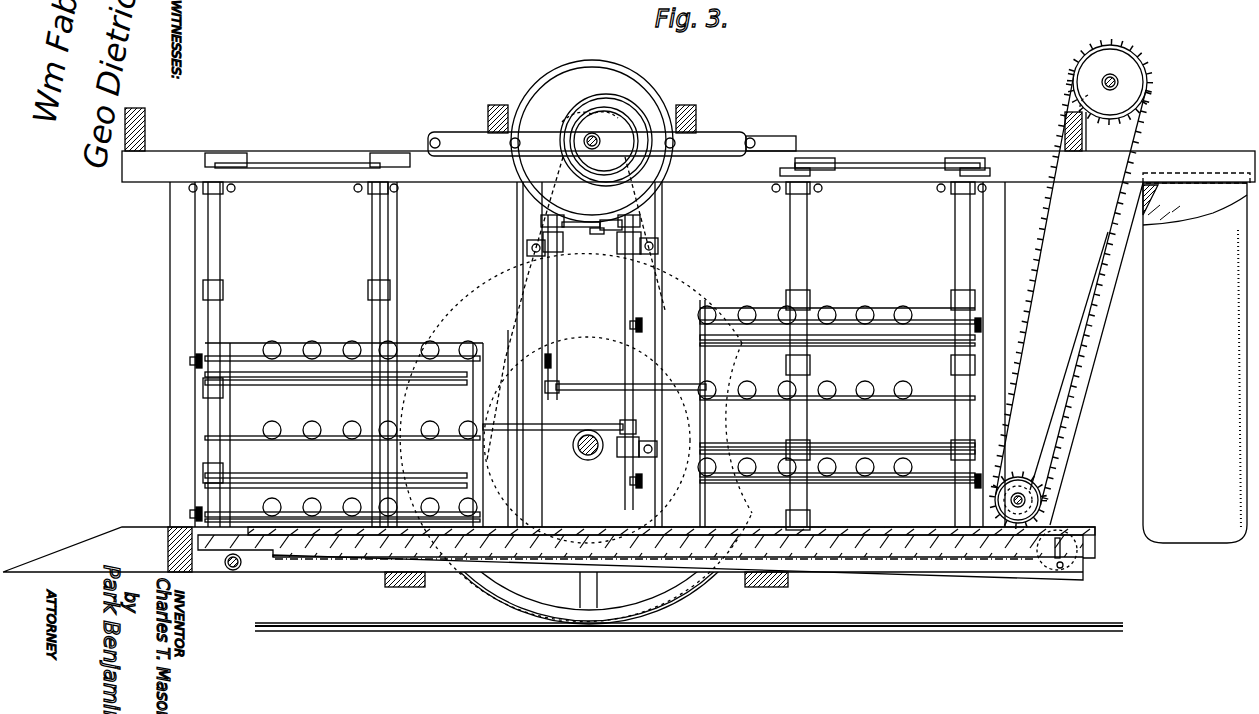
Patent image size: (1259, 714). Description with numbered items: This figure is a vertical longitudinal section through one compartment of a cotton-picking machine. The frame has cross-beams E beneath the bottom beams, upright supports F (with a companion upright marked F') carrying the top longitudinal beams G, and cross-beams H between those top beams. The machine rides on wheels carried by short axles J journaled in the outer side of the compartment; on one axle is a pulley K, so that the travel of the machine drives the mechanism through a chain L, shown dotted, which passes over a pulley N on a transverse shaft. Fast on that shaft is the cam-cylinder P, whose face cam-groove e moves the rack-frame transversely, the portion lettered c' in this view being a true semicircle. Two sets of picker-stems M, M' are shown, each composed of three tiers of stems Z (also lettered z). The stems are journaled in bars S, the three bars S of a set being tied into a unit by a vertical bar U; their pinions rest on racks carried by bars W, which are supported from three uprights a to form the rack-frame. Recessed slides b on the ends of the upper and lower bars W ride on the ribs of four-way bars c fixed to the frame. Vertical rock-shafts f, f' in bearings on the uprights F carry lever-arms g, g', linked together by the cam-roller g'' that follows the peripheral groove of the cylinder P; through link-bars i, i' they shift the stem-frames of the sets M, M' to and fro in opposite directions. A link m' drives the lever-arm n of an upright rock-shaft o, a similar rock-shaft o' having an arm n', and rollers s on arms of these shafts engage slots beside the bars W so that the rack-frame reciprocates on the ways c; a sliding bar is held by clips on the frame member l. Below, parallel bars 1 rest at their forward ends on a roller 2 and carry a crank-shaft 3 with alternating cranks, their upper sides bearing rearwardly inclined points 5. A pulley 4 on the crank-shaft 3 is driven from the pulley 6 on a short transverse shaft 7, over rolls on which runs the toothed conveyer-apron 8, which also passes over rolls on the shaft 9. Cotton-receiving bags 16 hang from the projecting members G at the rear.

The parallel bars 1 is at (646, 553).
The transverse round bar or roller 2 is at (226, 562).
The crank-shaft 3 is at (1057, 554).
The pulley 4 is at (1061, 537).
The projecting points 5 is at (748, 435).
The pulley 6 is at (1018, 491).
The short transverse shaft 7 is at (1014, 497).
The conveyer-apron 8 is at (1071, 299).
The shaft 9 is at (1110, 82).
The cotton-receiving bags 16 is at (1196, 358).
The top longitudinal beams G is at (688, 156).
The cross-beams H is at (605, 127).
The cross-beams E is at (549, 560).
The cam-cylinder P is at (592, 141).
The face cam-groove e is at (606, 136).
The semicircular portion of face cam-groove c' is at (593, 141).
The pulley N is at (576, 287).
The frame member l is at (612, 144).
The lever-arm n is at (890, 153).
The link m' is at (776, 168).
The lever-arm n' is at (981, 168).
The upright supports F is at (414, 354).
The vertical rod F' is at (387, 354).
The chain L is at (664, 354).
The vertical rock-shaft f is at (631, 362).
The vertical rock-shaft f' is at (550, 307).
The lever-arm g is at (611, 229).
The lever-arm g' is at (581, 234).
The cam-roller g'' is at (598, 238).
The link-bar i is at (570, 432).
The link-bar i' is at (625, 380).
The short axles J is at (588, 451).
The pulley K is at (689, 441).
The front set of stems M is at (344, 435).
The rear set of stems M' is at (837, 356).
The stems z is at (342, 352).
The rack bars W is at (568, 443).
The rollers s is at (545, 423).
The stem-supporting bar S is at (836, 318).
The stems Z is at (836, 438).
The upright supports a is at (234, 400).
The vertical bar U is at (600, 413).
The recessed slides b is at (588, 409).
The four-way bars c is at (395, 419).
The upright rock-shaft o is at (895, 354).
The upright rock-shaft o' is at (972, 354).